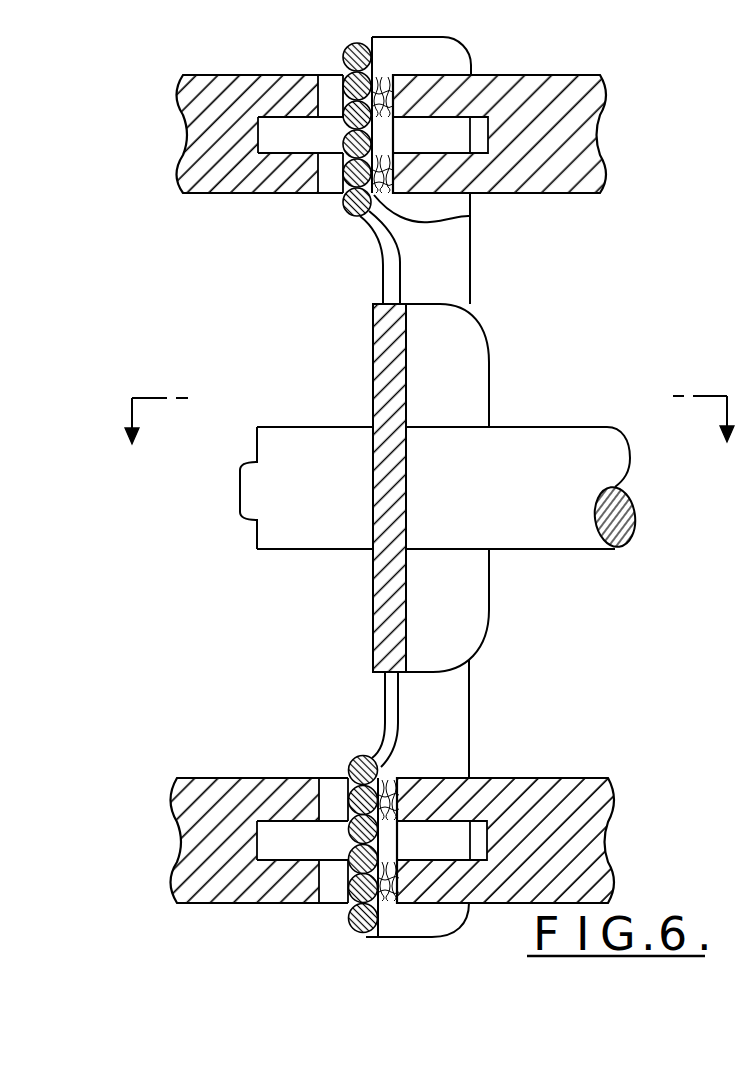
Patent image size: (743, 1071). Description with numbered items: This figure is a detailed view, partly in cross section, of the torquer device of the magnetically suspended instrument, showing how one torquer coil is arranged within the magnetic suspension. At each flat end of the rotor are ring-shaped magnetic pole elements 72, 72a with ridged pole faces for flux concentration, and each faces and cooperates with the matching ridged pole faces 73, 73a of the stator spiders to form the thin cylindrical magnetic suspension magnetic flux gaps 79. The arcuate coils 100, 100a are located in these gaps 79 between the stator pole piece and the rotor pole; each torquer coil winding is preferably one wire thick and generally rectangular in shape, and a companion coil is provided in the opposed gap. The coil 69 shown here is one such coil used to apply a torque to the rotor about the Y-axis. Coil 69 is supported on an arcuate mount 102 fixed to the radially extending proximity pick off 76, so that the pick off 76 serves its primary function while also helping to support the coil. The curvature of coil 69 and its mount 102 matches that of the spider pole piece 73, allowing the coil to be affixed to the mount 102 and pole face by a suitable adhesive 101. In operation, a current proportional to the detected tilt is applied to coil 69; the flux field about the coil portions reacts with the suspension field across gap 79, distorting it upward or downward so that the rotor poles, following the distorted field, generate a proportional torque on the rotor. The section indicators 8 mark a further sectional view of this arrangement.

The section line 8- 8 is at (429, 434).
The torquer coil 69 is at (355, 269).
The ring-shaped magnetic pole element 72 is at (260, 117).
The ring-shaped magnetic pole element 72a is at (207, 787).
The ridged pole face of stator spider 73 is at (558, 75).
The ridged pole face of stator spider 73a is at (534, 778).
The proximity pick off 76 is at (558, 437).
The magnetic suspension magnetic flux gap 79 is at (338, 193).
The arcuate coil 100 is at (350, 50).
The arcuate coil 100a is at (351, 760).
The adhesive 101 is at (470, 217).
The arcuate mount 102 is at (440, 303).